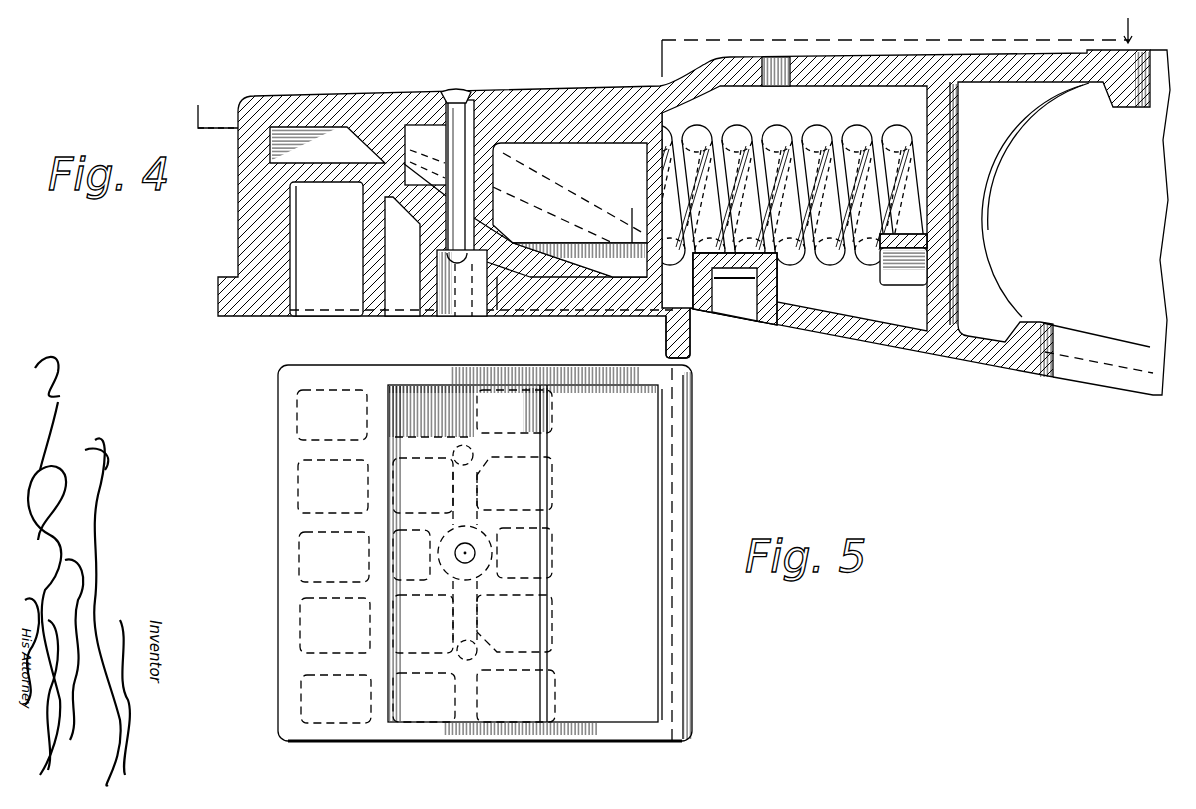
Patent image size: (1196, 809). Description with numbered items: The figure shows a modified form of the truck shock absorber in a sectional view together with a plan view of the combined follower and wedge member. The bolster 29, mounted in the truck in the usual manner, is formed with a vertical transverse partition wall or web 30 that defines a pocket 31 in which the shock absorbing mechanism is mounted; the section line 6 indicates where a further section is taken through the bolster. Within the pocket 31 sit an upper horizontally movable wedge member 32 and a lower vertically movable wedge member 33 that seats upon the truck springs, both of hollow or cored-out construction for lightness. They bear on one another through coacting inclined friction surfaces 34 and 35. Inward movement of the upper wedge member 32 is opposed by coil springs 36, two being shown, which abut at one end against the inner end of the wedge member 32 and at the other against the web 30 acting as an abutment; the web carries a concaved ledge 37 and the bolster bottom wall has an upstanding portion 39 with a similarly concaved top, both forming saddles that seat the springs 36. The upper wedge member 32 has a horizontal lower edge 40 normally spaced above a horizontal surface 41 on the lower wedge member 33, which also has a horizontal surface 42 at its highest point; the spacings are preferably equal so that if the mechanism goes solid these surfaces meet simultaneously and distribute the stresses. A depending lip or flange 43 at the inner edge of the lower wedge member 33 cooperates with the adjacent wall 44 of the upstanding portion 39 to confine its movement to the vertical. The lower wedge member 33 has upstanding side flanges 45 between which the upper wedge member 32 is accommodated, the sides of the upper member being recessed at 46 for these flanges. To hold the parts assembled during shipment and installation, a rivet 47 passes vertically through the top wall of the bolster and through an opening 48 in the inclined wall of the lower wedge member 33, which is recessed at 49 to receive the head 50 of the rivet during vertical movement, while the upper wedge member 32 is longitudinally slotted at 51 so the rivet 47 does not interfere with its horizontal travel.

In FIG. 4, the section line 6- 6 is at (661, 79).
In FIG. 4, the bolster 29 is at (987, 358).
In FIG. 4, the partition wall or web 30 is at (945, 268).
In FIG. 4, the pocket 31 is at (794, 208).
In FIG. 4, the upper horizontally movable wedge member 32 is at (548, 127).
In FIG. 4, the lower vertically movable wedge member 33 is at (360, 173).
In FIG. 5, the lower vertically movable wedge member 33 is at (334, 556).
In FIG. 4, the inclined friction surface 34 is at (352, 150).
In FIG. 4, the inclined friction surface 35 is at (540, 273).
In FIG. 5, the inclined friction surface 35 is at (527, 562).
In FIG. 4, the coil springs 36 is at (779, 130).
In FIG. 4, the ledge 37 is at (900, 252).
In FIG. 4, the upstanding portion 39 is at (780, 272).
In FIG. 4, the horizontal lower edge 40 is at (603, 246).
In FIG. 4, the horizontal surface 41 is at (597, 279).
In FIG. 5, the horizontal surface 41 is at (525, 553).
In FIG. 4, the horizontal surface 42 is at (287, 165).
In FIG. 5, the horizontal surface 42 is at (280, 457).
In FIG. 4, the depending lip or flange 43 is at (690, 346).
In FIG. 5, the depending lip or flange 43 is at (683, 522).
In FIG. 4, the wall 44 is at (730, 315).
In FIG. 4, the upstanding side flanges 45 is at (628, 217).
In FIG. 4, the recess 46 is at (586, 194).
In FIG. 4, the rivet 47 is at (457, 95).
In FIG. 4, the opening 48 is at (447, 237).
In FIG. 5, the opening 48 is at (470, 552).
In FIG. 4, the socket or recess 49 is at (447, 297).
In FIG. 5, the socket or recess 49 is at (476, 532).
In FIG. 4, the head 50 is at (460, 313).
In FIG. 4, the longitudinal slot 51 is at (418, 130).